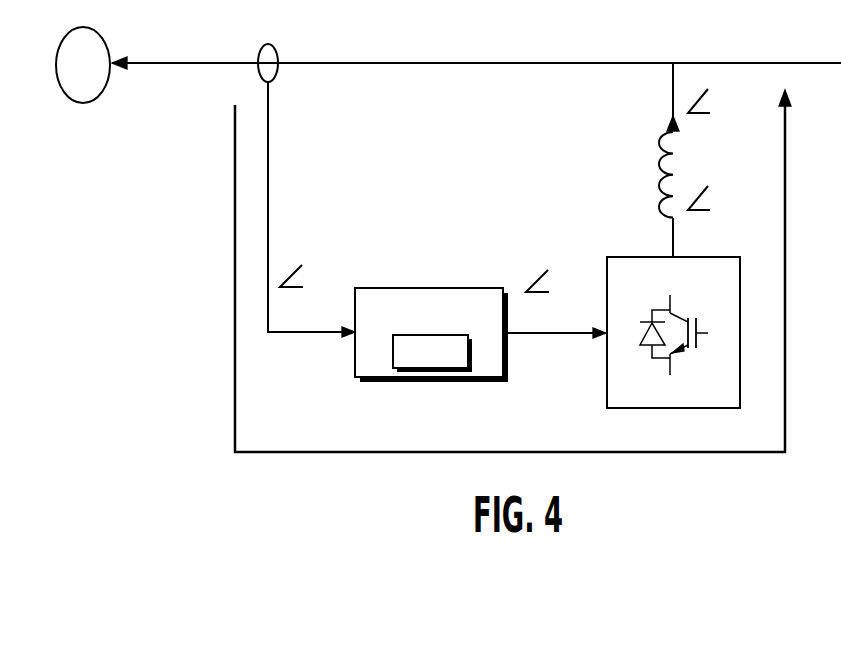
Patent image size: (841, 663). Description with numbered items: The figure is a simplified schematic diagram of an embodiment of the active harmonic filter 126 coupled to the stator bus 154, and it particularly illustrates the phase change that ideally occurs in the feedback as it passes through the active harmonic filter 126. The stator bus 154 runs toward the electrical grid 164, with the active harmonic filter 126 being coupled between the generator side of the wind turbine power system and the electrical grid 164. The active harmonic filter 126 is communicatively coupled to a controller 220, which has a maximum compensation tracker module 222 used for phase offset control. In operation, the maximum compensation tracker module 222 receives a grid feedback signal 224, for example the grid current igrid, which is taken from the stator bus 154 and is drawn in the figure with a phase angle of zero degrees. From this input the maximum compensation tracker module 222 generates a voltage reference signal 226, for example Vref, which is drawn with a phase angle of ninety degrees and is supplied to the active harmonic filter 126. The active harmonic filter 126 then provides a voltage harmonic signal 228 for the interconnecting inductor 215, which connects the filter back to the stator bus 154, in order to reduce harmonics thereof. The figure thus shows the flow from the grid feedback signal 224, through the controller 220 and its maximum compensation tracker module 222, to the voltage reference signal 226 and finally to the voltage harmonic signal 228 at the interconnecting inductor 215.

The electrical grid 164 is at (100, 79).
The stator bus 154 is at (277, 48).
The interconnecting inductor 215 is at (636, 191).
The voltage harmonic signal 228 is at (776, 254).
The active harmonic filter 126 is at (750, 329).
The controller 220 is at (448, 319).
The maximum compensation tracker module 222 is at (448, 366).
The grid feedback signal 224 is at (305, 334).
The voltage reference signal 226 is at (545, 336).